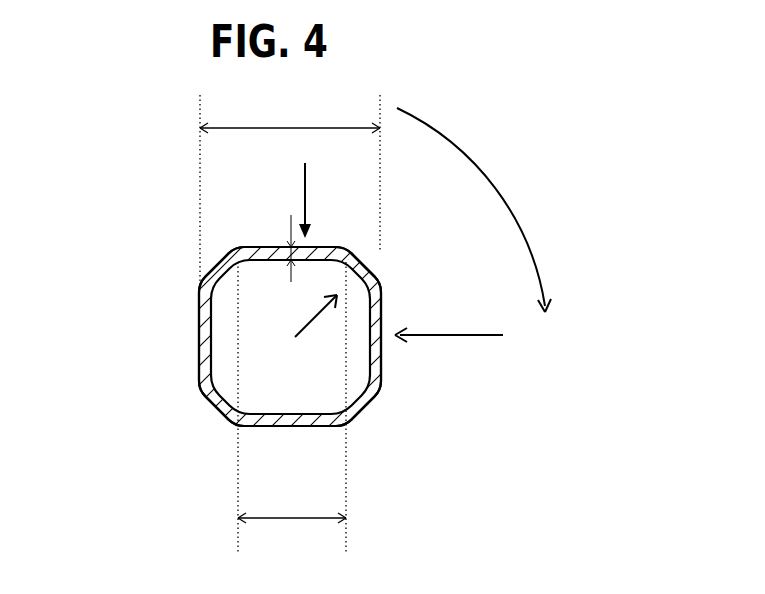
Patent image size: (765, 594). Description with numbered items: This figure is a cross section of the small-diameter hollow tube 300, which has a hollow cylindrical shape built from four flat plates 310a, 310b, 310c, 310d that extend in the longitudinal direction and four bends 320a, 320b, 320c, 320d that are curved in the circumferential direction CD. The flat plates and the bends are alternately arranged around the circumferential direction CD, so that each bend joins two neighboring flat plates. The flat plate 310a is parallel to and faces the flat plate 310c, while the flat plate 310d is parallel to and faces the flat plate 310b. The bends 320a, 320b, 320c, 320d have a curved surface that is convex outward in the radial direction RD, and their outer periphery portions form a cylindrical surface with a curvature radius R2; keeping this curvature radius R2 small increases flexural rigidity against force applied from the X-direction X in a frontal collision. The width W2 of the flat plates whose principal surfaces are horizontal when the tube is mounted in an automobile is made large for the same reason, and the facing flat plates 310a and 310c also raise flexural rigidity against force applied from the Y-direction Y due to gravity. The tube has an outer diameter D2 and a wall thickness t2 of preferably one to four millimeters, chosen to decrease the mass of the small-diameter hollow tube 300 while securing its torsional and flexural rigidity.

The small-diameter hollow tube 300 is at (222, 218).
The flat plate 310a is at (323, 247).
The flat plate 310b is at (380, 312).
The flat plate 310c is at (317, 427).
The flat plate 310d is at (200, 362).
The bend 320a is at (370, 254).
The bend 320b is at (378, 402).
The bend 320c is at (220, 417).
The bend 320d is at (217, 258).
The outer diameter D2 is at (290, 190).
The width W2 is at (292, 407).
The thickness t2 is at (277, 246).
The curvature radius R2 is at (372, 273).
The X-direction X is at (449, 348).
The Y-direction Y is at (315, 200).
The radial direction RD is at (295, 317).
The circumferential direction CD is at (487, 210).